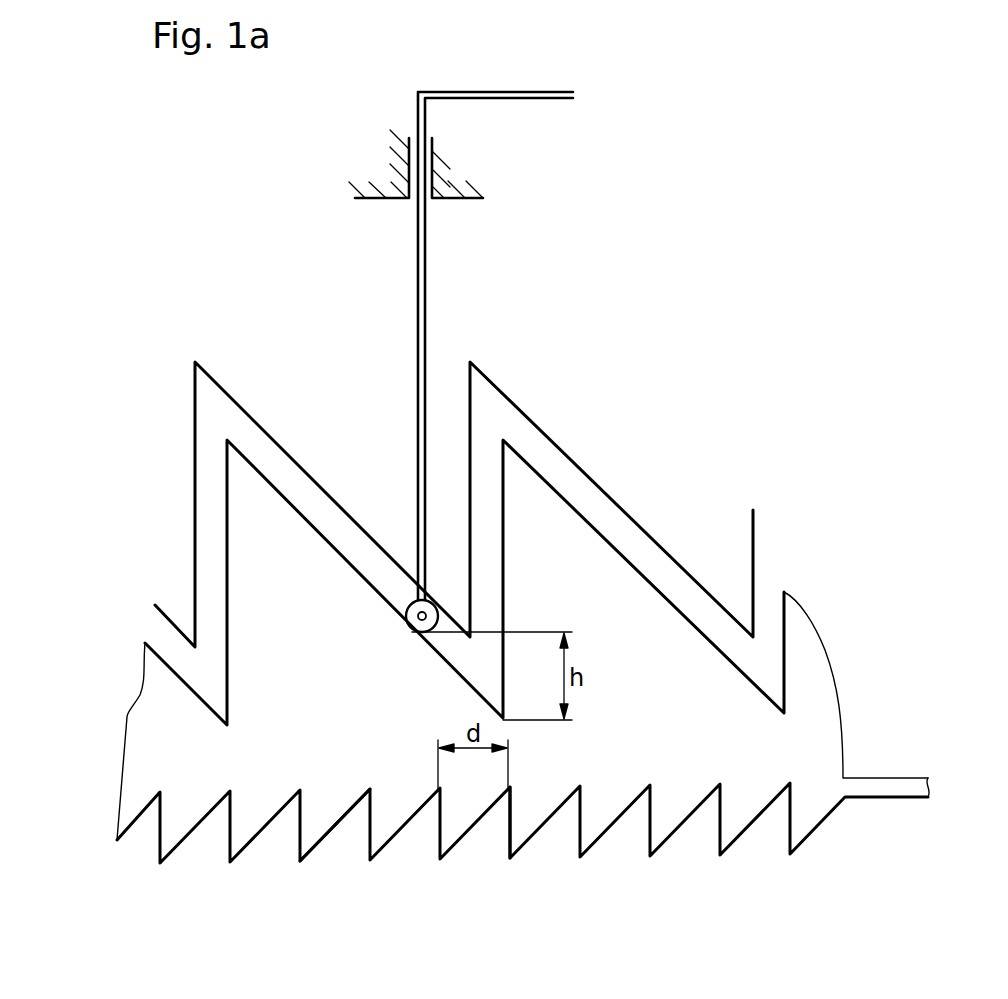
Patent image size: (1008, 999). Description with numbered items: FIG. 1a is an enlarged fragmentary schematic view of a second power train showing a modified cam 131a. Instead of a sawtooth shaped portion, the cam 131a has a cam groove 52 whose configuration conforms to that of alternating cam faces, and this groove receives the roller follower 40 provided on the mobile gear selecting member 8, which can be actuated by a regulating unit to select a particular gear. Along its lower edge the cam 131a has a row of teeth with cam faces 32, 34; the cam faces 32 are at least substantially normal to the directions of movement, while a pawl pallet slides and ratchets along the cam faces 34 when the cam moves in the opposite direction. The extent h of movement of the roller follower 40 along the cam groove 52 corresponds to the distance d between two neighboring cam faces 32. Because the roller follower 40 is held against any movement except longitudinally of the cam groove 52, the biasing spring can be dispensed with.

The gear selecting member 8 is at (422, 265).
The roller follower 40 is at (407, 618).
The cam groove 52 is at (675, 585).
The modified cam 131a is at (130, 670).
The cam faces 32 is at (367, 838).
The cam faces 34 is at (457, 843).